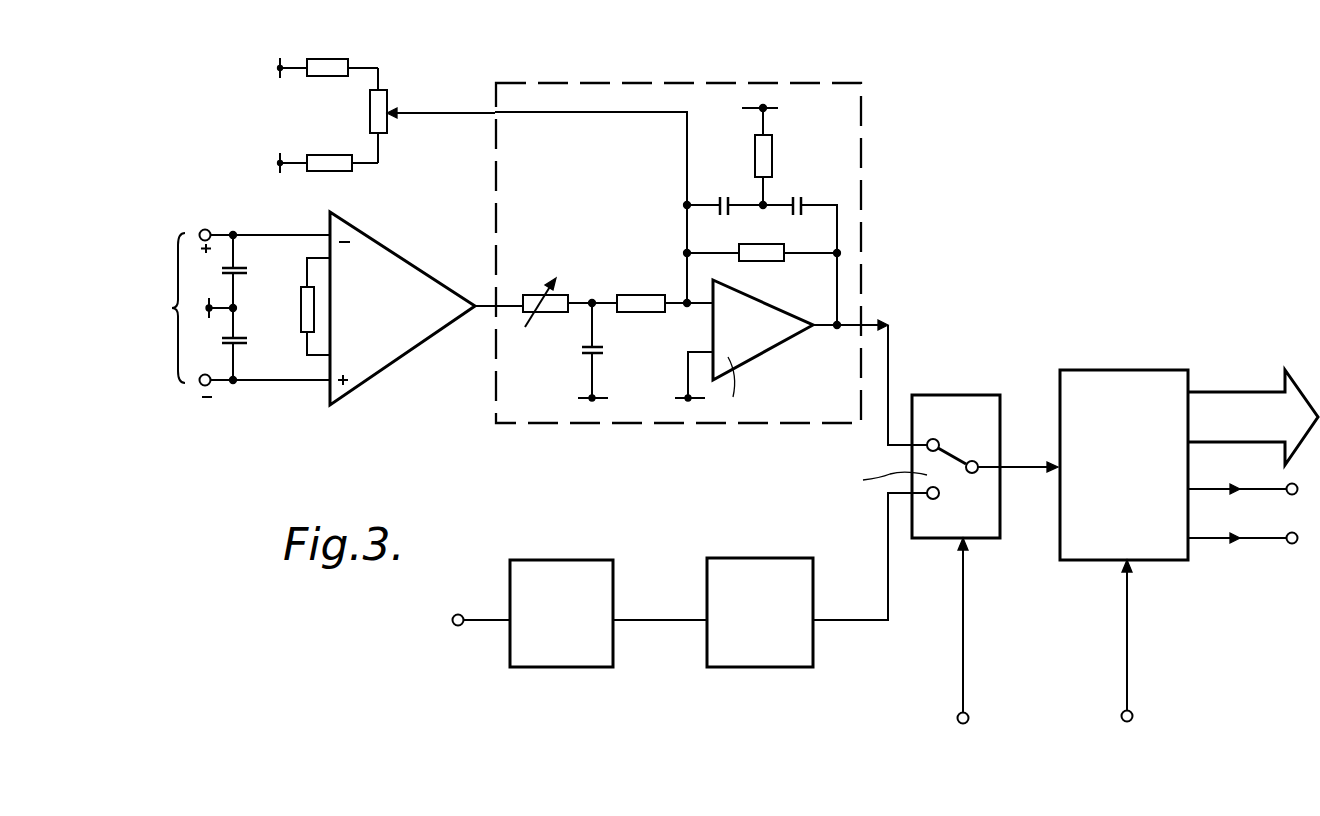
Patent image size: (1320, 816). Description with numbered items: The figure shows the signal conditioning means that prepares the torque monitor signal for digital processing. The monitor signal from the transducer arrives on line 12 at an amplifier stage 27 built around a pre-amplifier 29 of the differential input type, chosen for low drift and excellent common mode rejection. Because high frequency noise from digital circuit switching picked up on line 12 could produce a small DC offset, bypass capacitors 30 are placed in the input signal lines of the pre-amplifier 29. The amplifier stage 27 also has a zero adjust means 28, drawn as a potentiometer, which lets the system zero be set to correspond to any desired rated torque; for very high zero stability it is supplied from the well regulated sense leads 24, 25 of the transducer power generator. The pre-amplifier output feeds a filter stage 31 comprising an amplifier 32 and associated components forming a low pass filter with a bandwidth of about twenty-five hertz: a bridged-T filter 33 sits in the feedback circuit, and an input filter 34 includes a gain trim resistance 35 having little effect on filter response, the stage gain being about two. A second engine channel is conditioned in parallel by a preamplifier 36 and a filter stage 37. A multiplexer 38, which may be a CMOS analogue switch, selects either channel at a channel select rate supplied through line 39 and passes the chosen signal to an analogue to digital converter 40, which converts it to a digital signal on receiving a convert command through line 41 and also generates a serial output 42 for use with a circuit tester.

The line 12 is at (225, 228).
The sense lead 24 is at (288, 82).
The sense lead 25 is at (292, 165).
The amplifier stage 27 is at (798, 77).
The zero adjust means 28 is at (386, 80).
The pre-amplifier 29 is at (403, 347).
The bypass capacitors 30 is at (240, 277).
The filter stage 31 is at (864, 168).
The amplifier 32 is at (754, 348).
The bridged-T filter 33 is at (787, 182).
The input filter 34 is at (600, 292).
The gain trim resistance 35 is at (552, 314).
The preamplifier 36 is at (557, 568).
The filter stage 37 is at (752, 568).
The multiplexer 38 is at (943, 383).
The line 39 is at (965, 660).
The analogue to digital converter 40 is at (1123, 382).
The line 41 is at (1127, 656).
The serial output 42 is at (1250, 488).